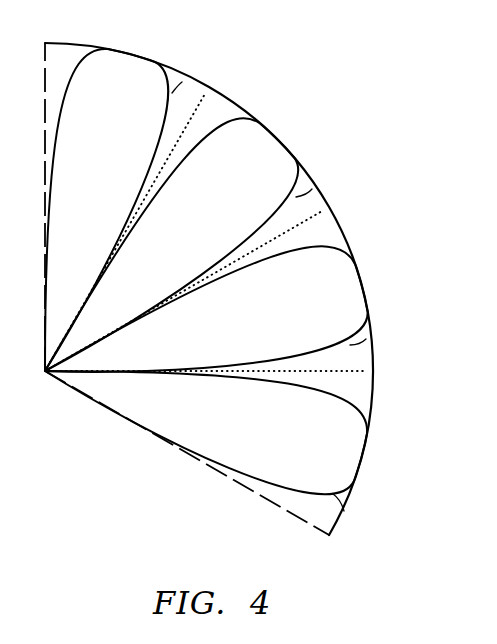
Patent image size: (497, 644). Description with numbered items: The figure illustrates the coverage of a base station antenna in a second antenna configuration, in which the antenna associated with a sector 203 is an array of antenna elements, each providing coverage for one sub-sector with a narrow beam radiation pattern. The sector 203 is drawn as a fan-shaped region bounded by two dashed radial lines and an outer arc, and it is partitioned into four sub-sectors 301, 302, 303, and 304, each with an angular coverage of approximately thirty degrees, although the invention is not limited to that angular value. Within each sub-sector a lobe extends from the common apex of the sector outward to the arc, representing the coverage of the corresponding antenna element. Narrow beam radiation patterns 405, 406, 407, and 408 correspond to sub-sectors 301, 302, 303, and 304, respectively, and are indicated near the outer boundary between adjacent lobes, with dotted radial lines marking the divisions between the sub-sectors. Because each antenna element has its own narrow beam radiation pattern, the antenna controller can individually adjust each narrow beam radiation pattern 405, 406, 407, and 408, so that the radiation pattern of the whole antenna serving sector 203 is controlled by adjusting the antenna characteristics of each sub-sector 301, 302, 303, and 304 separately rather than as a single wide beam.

The sector 203 is at (186, 466).
The sub-sector 301 is at (73, 52).
The sub-sector 302 is at (232, 110).
The sub-sector 303 is at (340, 237).
The sub-sector 304 is at (376, 392).
The narrow beam radiation pattern 405 is at (171, 94).
The narrow beam radiation pattern 406 is at (296, 197).
The narrow beam radiation pattern 407 is at (350, 345).
The narrow beam radiation pattern 408 is at (333, 494).